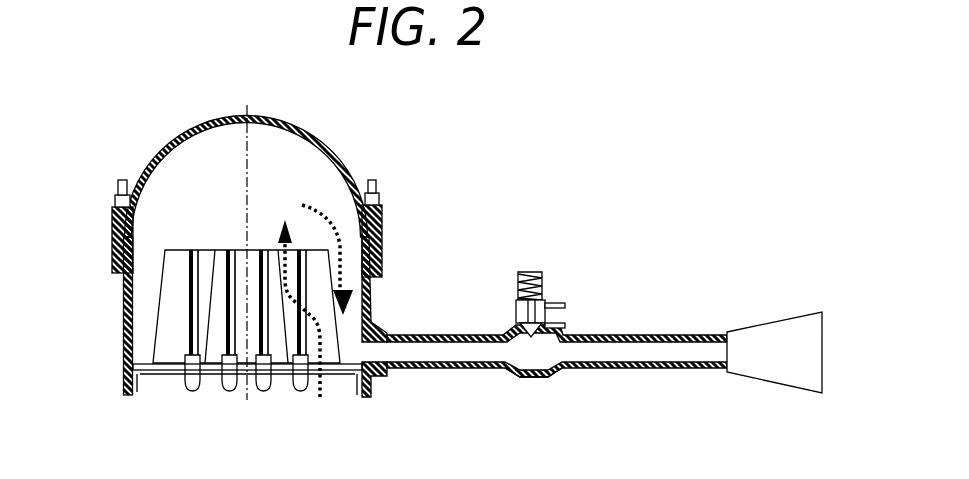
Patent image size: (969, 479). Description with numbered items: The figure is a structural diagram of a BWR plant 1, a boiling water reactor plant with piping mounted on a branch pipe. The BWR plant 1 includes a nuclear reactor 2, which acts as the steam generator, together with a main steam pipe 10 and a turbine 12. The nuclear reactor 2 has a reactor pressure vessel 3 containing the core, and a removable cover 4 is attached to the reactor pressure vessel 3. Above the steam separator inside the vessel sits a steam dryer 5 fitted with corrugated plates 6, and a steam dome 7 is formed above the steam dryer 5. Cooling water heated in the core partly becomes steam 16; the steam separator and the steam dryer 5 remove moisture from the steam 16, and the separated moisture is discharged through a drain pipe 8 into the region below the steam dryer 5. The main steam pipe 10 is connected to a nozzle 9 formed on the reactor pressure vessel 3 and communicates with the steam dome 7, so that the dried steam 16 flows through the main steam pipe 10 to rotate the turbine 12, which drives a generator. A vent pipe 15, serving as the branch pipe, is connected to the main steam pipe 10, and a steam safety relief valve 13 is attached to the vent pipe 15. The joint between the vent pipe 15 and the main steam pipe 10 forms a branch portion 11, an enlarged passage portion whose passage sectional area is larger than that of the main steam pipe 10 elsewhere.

The BWR plant 1 is at (462, 212).
The nuclear reactor 2 is at (323, 147).
The reactor pressure vessel 3 is at (123, 347).
The removable cover 4 is at (153, 160).
The steam dryer 5 is at (170, 293).
The corrugated plates 6 is at (187, 257).
The steam dome 7 is at (210, 190).
The drain pipe 8 is at (187, 385).
The nozzle 9 is at (373, 378).
The main steam pipe 10 is at (580, 370).
The branch portion 11 is at (528, 377).
The turbine 12 is at (765, 378).
The steam safety relief valve 13 is at (531, 273).
The vent pipe 15 is at (560, 303).
The steam 16 is at (320, 397).